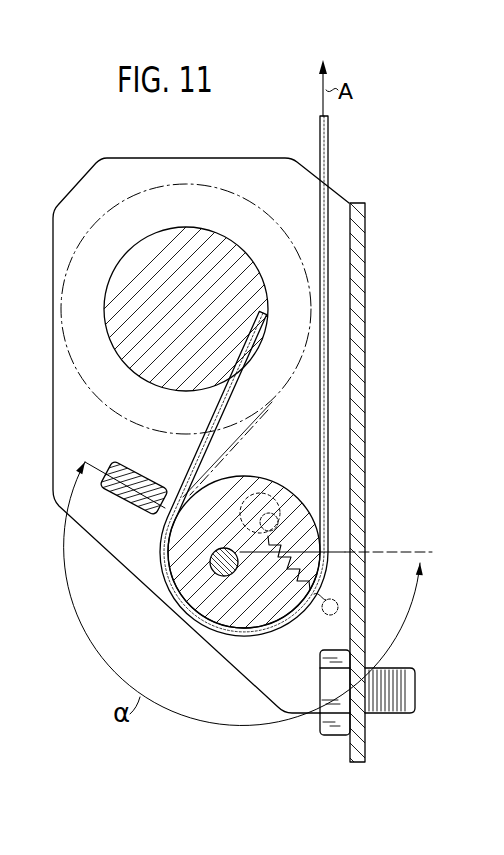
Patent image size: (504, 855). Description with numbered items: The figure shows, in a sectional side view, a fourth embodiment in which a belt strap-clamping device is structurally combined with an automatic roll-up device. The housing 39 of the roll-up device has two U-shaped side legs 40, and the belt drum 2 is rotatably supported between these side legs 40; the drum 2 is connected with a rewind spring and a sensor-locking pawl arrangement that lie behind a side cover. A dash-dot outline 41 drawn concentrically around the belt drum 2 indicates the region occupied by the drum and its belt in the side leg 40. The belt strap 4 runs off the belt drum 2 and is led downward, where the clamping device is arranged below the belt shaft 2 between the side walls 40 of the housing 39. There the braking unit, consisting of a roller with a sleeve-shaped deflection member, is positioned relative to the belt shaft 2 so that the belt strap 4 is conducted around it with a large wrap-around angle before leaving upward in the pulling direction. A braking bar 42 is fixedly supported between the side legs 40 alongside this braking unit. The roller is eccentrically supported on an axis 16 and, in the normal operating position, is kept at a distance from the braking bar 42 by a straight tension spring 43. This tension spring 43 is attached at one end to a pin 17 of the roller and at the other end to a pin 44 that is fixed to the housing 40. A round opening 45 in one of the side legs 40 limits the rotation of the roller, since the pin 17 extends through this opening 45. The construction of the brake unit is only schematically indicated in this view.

The belt drum 2 is at (149, 248).
The belt strap 4 is at (328, 143).
The axis 16 is at (222, 577).
The pin 17 is at (243, 525).
The housing 39 is at (370, 342).
The side legs 40 is at (222, 166).
The phantom circle of hole 41 is at (273, 187).
The braking bar 42 is at (132, 501).
The tension spring 43 is at (281, 563).
The pin 44 is at (325, 617).
The round opening 45 is at (265, 495).